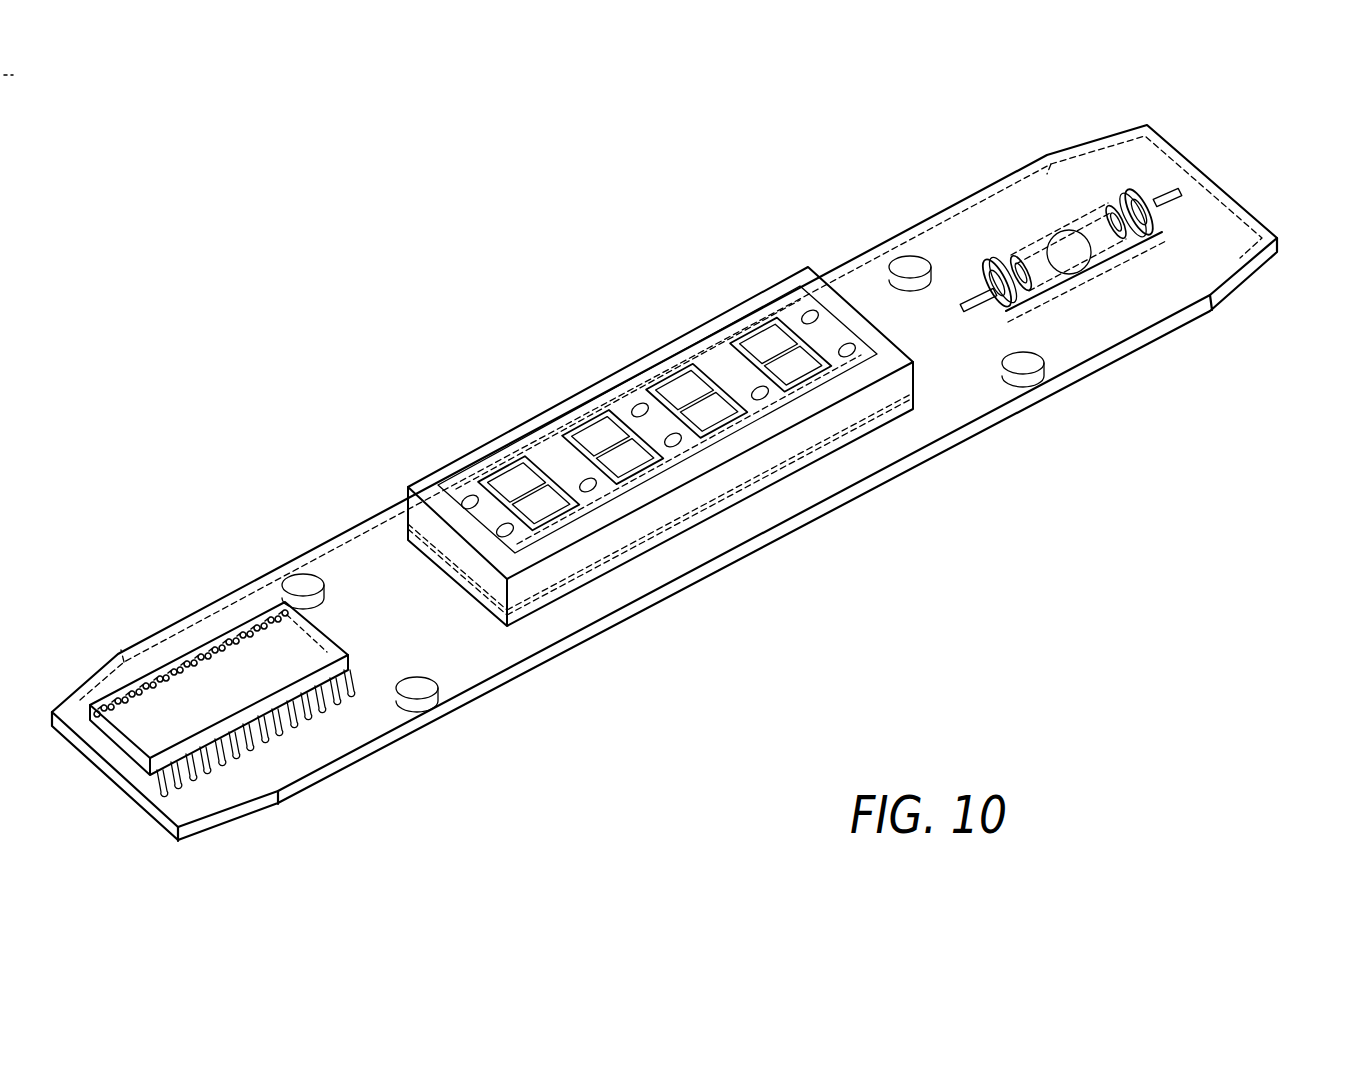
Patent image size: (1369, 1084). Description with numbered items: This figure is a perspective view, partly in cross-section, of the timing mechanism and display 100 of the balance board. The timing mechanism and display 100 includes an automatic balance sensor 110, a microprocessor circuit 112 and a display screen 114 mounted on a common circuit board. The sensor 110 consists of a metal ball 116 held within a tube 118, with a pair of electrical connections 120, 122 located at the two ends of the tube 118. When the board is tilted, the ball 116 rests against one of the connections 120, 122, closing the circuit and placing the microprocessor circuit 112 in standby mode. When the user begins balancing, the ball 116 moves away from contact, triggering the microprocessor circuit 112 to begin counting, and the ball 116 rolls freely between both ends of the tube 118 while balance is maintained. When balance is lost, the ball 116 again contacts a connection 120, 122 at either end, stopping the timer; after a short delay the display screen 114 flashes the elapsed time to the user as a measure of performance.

The timing mechanism and display 100 is at (455, 392).
The automatic balance sensor 110 is at (1094, 319).
The microprocessor circuit 112 is at (242, 673).
The display screen 114 is at (592, 491).
The metal ball 116 is at (1082, 258).
The tube 118 is at (1047, 280).
The electrical connection 120 is at (1005, 317).
The electrical connection 122 is at (1165, 222).